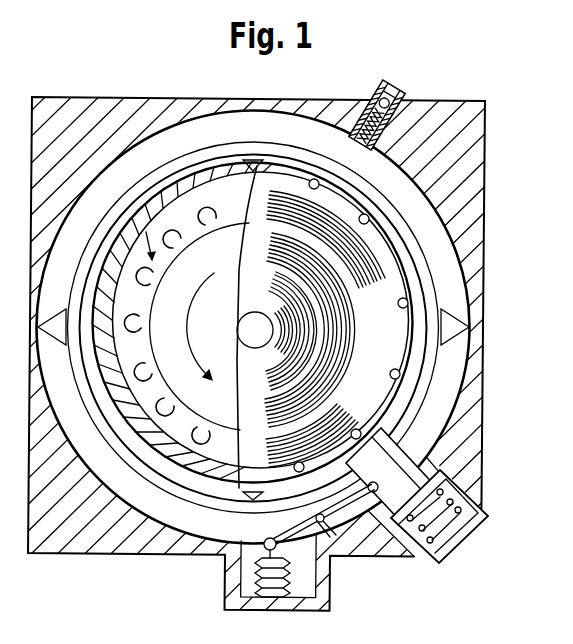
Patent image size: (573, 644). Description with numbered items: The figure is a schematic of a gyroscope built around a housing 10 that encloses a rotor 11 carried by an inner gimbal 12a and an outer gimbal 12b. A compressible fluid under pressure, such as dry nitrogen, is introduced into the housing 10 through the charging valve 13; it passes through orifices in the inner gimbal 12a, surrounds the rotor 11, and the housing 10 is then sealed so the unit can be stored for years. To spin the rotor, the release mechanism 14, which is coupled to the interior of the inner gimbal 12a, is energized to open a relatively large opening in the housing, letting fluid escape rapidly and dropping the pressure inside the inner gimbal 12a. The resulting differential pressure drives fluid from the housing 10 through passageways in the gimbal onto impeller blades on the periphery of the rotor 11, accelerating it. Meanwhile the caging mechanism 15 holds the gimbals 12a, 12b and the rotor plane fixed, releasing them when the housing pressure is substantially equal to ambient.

The housing 10 is at (304, 91).
The rotor 11 is at (218, 268).
The inner gimbal 12a is at (393, 288).
The outer gimbal 12b is at (418, 237).
The charging valve 13 is at (419, 81).
The release mechanism 14 is at (463, 540).
The caging mechanism 15 is at (406, 490).